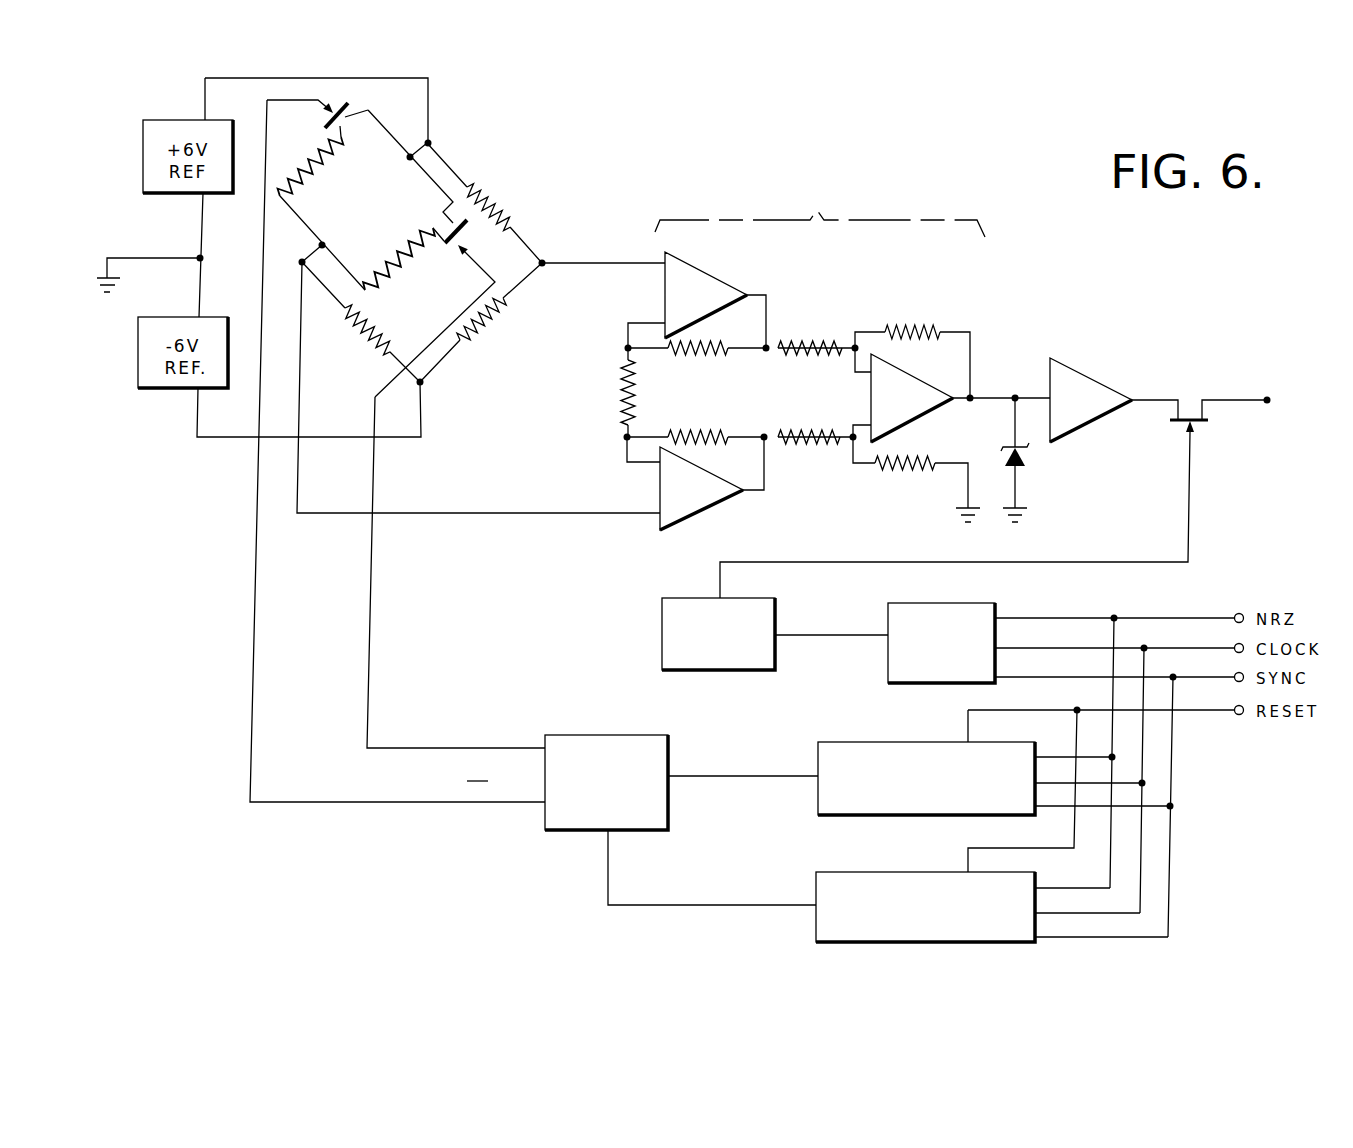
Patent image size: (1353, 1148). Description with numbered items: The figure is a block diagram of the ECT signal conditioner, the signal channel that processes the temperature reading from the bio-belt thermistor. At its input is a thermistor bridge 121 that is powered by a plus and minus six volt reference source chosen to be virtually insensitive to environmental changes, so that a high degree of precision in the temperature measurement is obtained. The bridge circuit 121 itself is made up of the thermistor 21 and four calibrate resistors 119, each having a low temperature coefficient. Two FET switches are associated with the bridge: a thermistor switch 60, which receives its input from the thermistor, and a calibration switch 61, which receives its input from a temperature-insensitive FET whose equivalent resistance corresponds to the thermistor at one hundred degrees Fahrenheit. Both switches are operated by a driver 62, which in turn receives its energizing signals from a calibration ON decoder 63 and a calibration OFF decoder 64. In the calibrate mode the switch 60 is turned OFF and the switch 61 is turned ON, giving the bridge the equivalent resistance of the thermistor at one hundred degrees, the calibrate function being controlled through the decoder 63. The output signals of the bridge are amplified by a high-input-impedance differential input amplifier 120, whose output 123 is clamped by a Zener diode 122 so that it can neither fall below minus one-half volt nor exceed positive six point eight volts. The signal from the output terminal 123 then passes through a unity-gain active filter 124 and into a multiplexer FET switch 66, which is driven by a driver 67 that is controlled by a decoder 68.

The thermistor 21 is at (387, 256).
The thermistor switch 60 is at (468, 229).
The calibration switch 61 is at (341, 100).
The driver 62 is at (608, 742).
The calibration ON decoder 63 is at (855, 895).
The calibration OFF decoder 64 is at (866, 748).
The multiplexer FET switch 66 is at (1200, 426).
The driver 67 is at (680, 606).
The decoder 68 is at (905, 613).
The calibrate resistors 119 is at (310, 166).
The differential input amplifier 120 is at (820, 320).
The thermistor bridge 121 is at (517, 186).
The Zener diode 122 is at (1030, 458).
The output 123 is at (1014, 392).
The unity-gain active filter 124 is at (1088, 388).